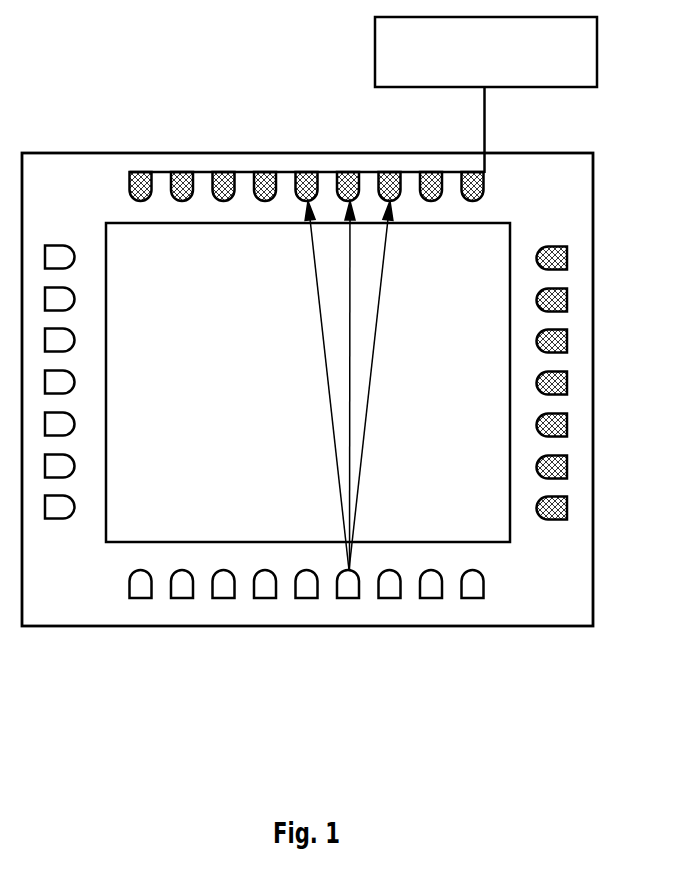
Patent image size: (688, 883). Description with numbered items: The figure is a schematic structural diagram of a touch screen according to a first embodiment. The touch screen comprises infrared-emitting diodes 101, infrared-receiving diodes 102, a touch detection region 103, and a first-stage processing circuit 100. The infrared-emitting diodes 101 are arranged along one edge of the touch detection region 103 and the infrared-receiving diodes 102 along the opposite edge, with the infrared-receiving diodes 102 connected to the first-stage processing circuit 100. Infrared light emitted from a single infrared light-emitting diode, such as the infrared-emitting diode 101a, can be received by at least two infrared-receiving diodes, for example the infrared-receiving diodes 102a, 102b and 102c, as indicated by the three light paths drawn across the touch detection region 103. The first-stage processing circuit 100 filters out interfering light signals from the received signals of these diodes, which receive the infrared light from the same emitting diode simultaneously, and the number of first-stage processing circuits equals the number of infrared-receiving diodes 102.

The first-stage processing circuit 100 is at (486, 95).
The infrared-emitting diodes 101 is at (182, 598).
The infrared-emitting diode 101a is at (350, 598).
The infrared-receiving diodes 102 is at (184, 173).
The infrared-receiving diode 102a is at (308, 172).
The infrared-receiving diode 102b is at (349, 172).
The infrared-receiving diode 102c is at (391, 172).
The touch detection region 103 is at (132, 263).